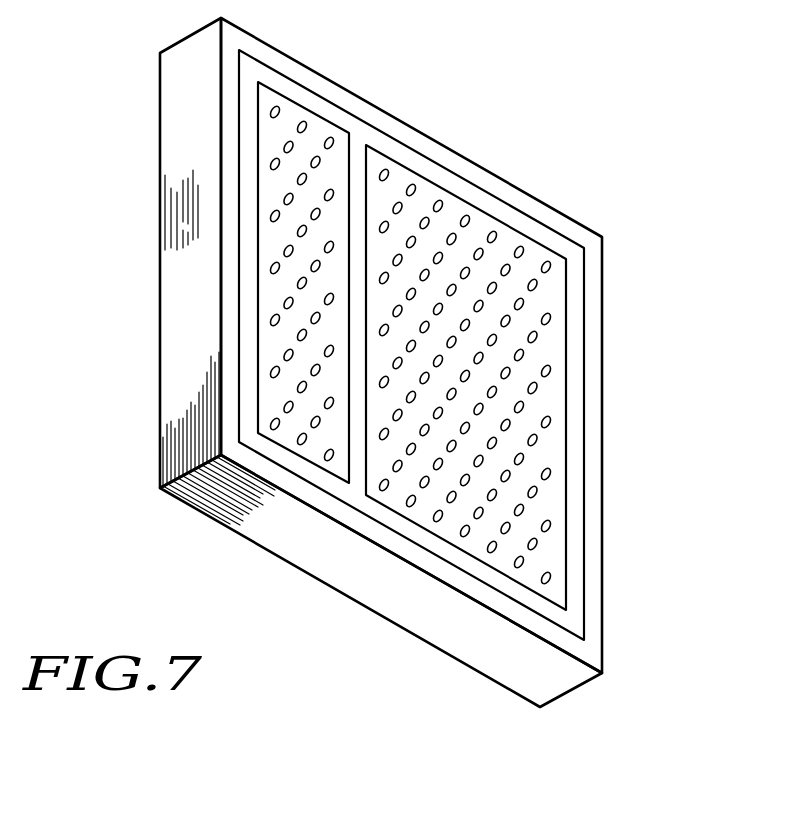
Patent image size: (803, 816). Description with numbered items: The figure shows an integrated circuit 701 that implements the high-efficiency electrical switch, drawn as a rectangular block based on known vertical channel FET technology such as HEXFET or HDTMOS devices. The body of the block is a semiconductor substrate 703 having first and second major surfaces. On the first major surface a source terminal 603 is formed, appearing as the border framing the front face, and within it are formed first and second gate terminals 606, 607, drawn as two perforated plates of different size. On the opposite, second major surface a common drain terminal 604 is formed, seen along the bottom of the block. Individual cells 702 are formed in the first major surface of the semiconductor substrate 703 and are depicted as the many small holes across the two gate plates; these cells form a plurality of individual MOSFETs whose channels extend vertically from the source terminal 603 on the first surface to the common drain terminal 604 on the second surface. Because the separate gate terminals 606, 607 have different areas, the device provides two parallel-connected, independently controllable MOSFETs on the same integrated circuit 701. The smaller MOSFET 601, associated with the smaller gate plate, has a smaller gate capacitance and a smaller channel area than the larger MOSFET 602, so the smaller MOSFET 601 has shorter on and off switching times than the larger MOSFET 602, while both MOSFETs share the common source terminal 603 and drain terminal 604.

The MOSFET 601 is at (356, 81).
The larger MOSFET 602 is at (363, 84).
The source terminal 603 is at (577, 343).
The common drain terminal 604 is at (302, 570).
The first gate terminal 606 is at (270, 144).
The second gate terminal 607 is at (552, 298).
The integrated circuit 701 is at (229, 547).
The individual cells 702 is at (281, 250).
The semiconductor substrate 703 is at (180, 403).